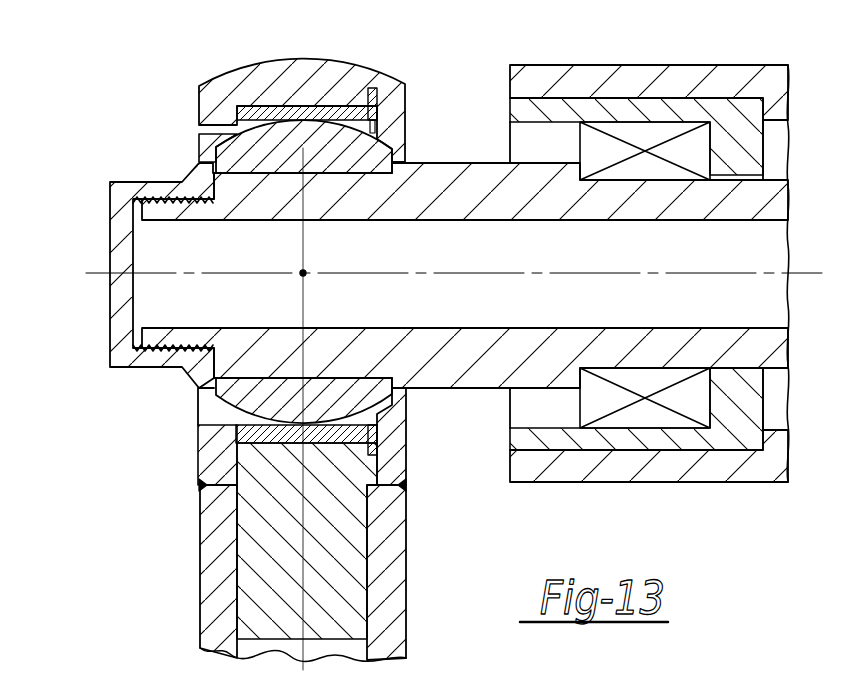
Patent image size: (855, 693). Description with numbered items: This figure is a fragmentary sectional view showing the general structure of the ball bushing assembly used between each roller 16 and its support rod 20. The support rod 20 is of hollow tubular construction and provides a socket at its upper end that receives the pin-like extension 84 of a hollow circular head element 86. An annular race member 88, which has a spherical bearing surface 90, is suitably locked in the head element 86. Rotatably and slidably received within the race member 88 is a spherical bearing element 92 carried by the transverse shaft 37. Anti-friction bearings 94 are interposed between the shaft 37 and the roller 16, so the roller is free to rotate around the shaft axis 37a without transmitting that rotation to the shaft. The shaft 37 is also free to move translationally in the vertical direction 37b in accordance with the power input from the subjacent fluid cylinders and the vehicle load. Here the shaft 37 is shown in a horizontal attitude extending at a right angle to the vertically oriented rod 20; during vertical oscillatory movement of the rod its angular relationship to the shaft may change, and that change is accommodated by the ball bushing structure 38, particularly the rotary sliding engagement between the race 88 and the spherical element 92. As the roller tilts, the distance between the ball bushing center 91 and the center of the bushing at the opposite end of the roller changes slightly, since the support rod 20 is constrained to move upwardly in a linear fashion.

The roller 16 is at (693, 481).
The support rod 20 is at (407, 583).
The transverse shaft 37 is at (482, 375).
The shaft axis 37a is at (567, 272).
The vertical direction 37b is at (73, 230).
The ball bushing structure 38 is at (138, 376).
The pin-like extension 84 is at (247, 576).
The hollow circular head element 86 is at (237, 62).
The annular race member 88 is at (307, 107).
The spherical bearing surface 90 is at (278, 121).
The ball bushing center 91 is at (306, 271).
The spherical bearing element 92 is at (234, 145).
The anti-friction bearings 94 is at (647, 416).